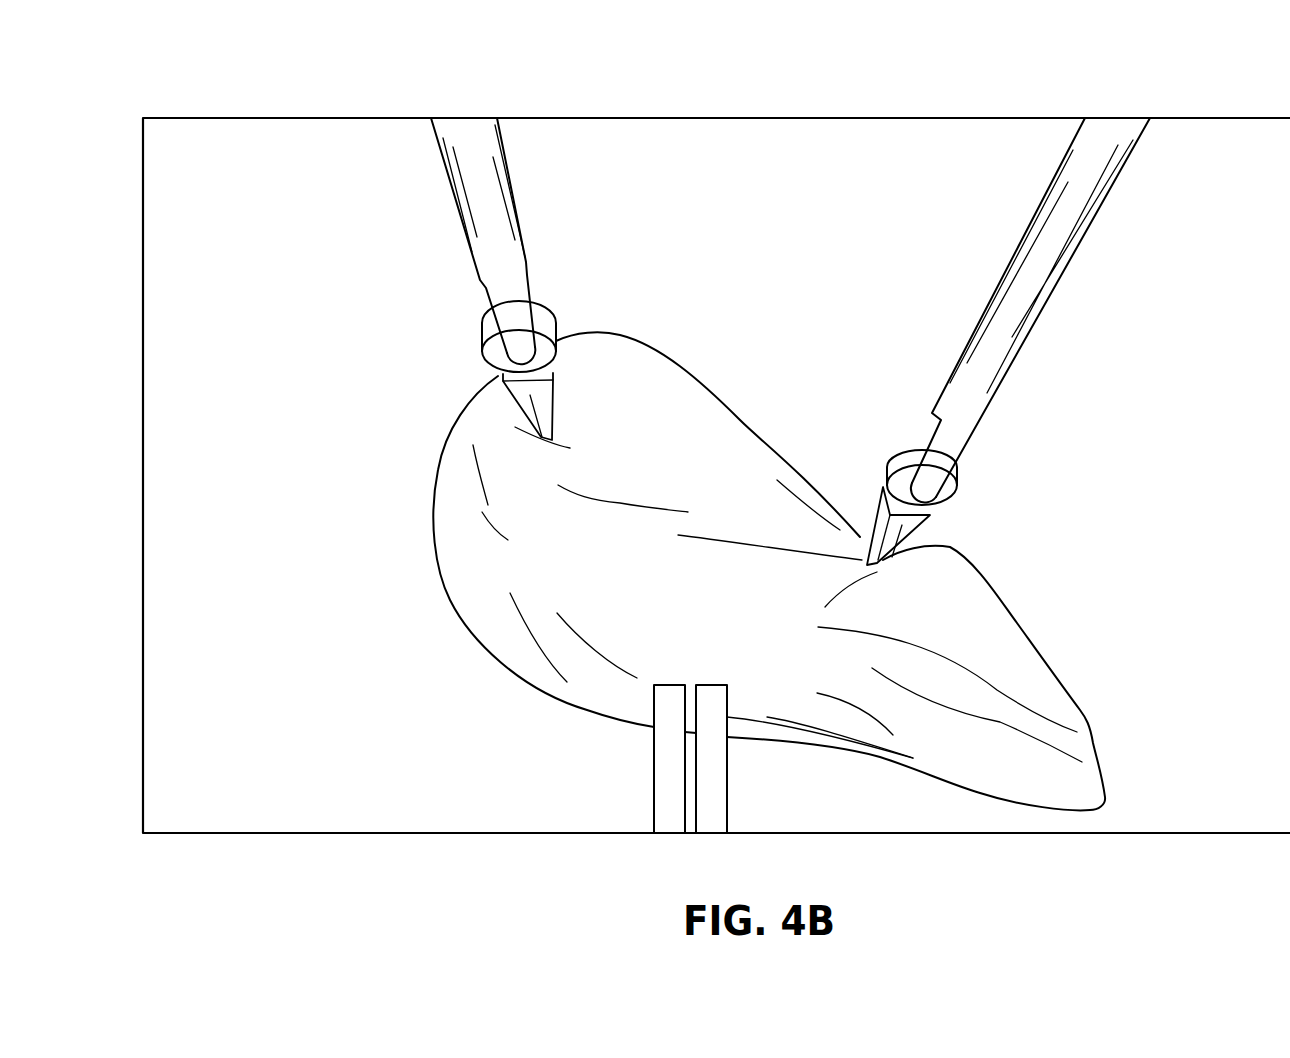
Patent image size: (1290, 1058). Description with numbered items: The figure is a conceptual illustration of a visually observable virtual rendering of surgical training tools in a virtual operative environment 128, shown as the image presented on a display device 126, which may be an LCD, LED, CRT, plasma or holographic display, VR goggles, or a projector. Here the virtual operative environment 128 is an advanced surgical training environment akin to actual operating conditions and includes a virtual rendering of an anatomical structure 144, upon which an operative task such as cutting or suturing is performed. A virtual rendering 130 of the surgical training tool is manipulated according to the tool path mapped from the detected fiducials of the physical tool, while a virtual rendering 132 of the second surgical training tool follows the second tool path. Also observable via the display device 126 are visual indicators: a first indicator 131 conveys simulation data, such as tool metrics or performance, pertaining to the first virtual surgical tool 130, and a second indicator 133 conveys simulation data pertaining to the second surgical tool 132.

The display device 126 is at (173, 105).
The virtual operative environment 128 is at (452, 225).
The virtual rendering of the second surgical training tool 132 is at (515, 188).
The virtual rendering of the surgical training tool 130 is at (1037, 205).
The anatomical structure 144 is at (750, 430).
The second indicator 133 is at (654, 793).
The first indicator 131 is at (727, 793).